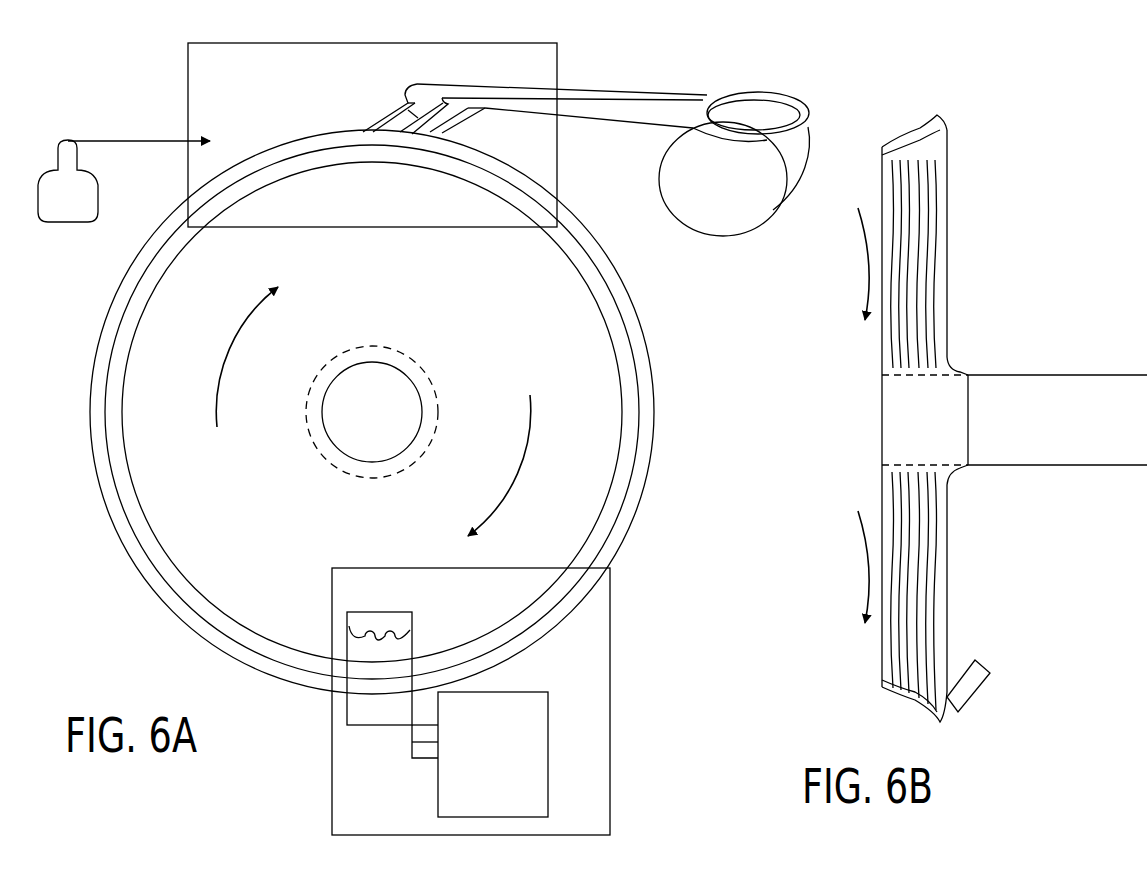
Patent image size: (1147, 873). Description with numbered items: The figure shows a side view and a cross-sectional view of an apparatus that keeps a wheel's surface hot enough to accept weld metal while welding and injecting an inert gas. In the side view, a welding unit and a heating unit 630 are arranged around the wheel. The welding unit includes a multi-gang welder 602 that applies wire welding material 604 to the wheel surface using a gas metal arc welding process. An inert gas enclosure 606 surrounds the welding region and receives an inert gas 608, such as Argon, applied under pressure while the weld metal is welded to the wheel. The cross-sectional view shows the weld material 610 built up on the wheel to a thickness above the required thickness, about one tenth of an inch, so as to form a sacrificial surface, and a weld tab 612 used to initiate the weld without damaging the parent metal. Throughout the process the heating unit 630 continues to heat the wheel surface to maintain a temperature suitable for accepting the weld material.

In FIG. 6A, the multi-gang welder 602 is at (612, 89).
In FIG. 6A, the wire welding material 604 is at (805, 148).
In FIG. 6A, the inert gas enclosure 606 is at (557, 53).
In FIG. 6A, the inert gas 608 is at (80, 182).
In FIG. 6B, the weld material 610 is at (935, 126).
In FIG. 6B, the weld tab 612 is at (985, 669).
In FIG. 6A, the heating unit 630 is at (605, 706).